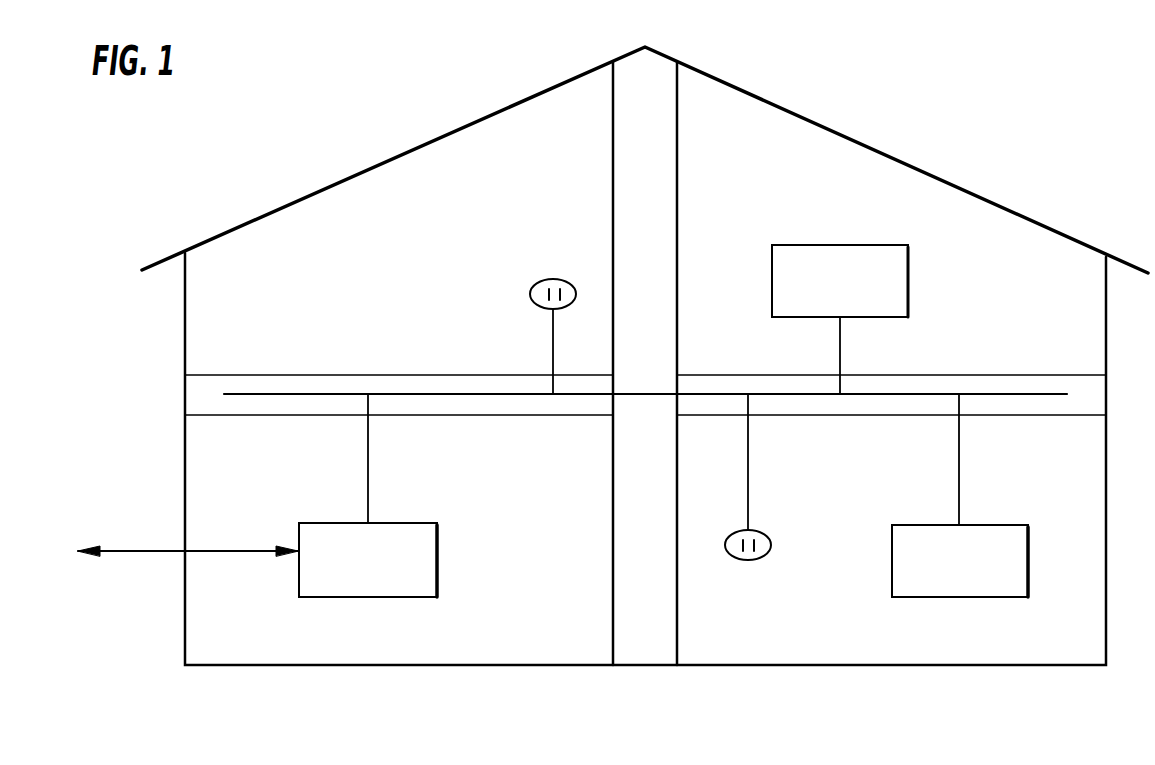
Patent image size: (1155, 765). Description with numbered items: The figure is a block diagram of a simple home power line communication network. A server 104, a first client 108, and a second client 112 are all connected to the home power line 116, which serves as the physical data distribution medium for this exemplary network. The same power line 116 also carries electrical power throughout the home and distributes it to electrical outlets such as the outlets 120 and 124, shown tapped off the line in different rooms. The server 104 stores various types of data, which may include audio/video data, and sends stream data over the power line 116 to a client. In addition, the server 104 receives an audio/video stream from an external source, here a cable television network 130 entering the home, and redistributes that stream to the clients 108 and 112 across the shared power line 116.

The server 104 is at (420, 523).
The Client (1) 108 is at (1010, 525).
The Client (2) 112 is at (888, 245).
The home power line 116 is at (264, 394).
The electrical outlet 120 is at (570, 282).
The electrical outlet 124 is at (748, 560).
The cable television network 130 is at (116, 550).